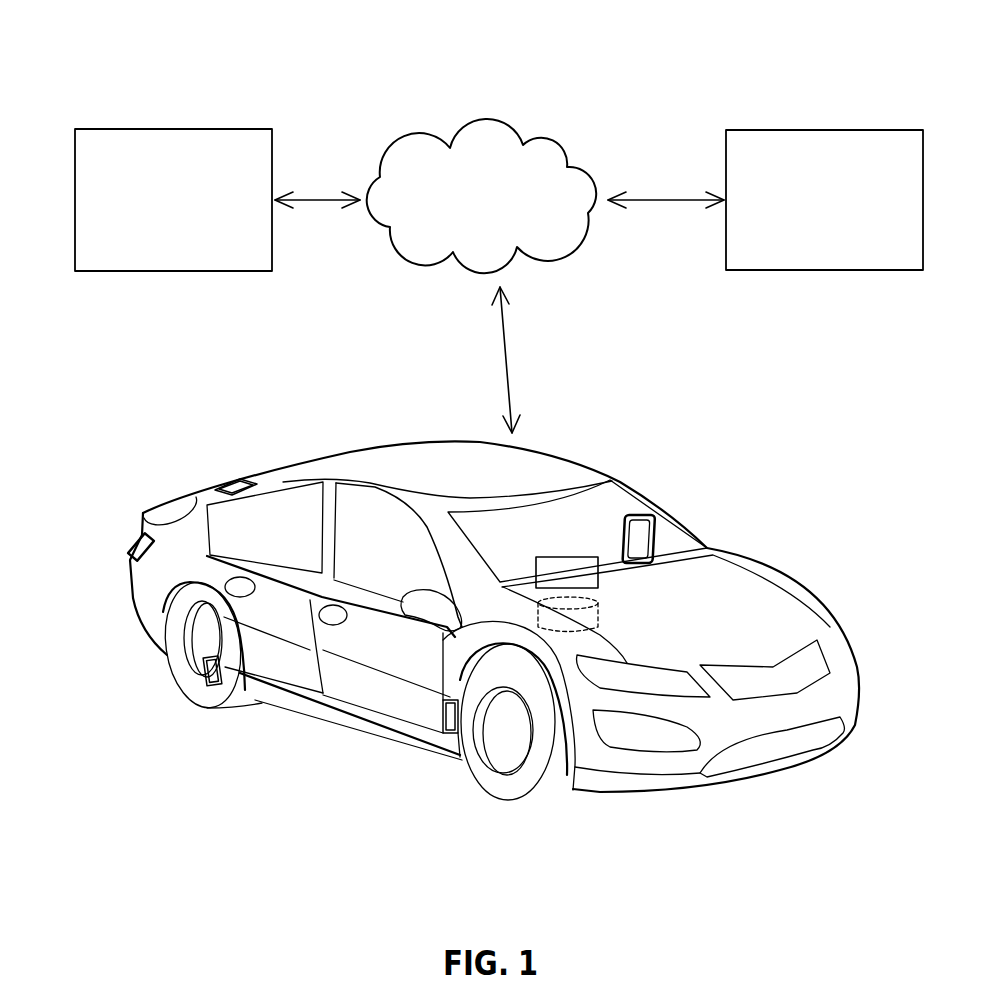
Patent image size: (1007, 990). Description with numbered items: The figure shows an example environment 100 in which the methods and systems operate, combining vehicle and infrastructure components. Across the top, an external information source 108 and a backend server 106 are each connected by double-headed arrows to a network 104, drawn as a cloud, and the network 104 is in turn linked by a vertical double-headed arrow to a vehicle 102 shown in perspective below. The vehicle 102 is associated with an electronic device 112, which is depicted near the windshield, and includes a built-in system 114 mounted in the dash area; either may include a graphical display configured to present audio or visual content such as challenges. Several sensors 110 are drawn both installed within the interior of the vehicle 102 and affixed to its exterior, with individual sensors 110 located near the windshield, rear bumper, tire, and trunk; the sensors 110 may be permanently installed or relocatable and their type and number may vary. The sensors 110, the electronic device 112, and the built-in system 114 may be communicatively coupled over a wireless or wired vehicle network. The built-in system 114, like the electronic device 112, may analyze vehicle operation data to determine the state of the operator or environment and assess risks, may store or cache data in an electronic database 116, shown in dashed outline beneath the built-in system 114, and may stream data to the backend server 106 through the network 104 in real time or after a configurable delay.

The environment 100 is at (509, 50).
The vehicle 102 is at (381, 441).
The network 104 is at (567, 133).
The backend server 106 is at (851, 128).
The external information source 108 is at (199, 128).
The sensor 110 is at (237, 477).
The electronic device 112 is at (637, 515).
The built-in system 114 is at (568, 557).
The electronic database 116 is at (537, 618).